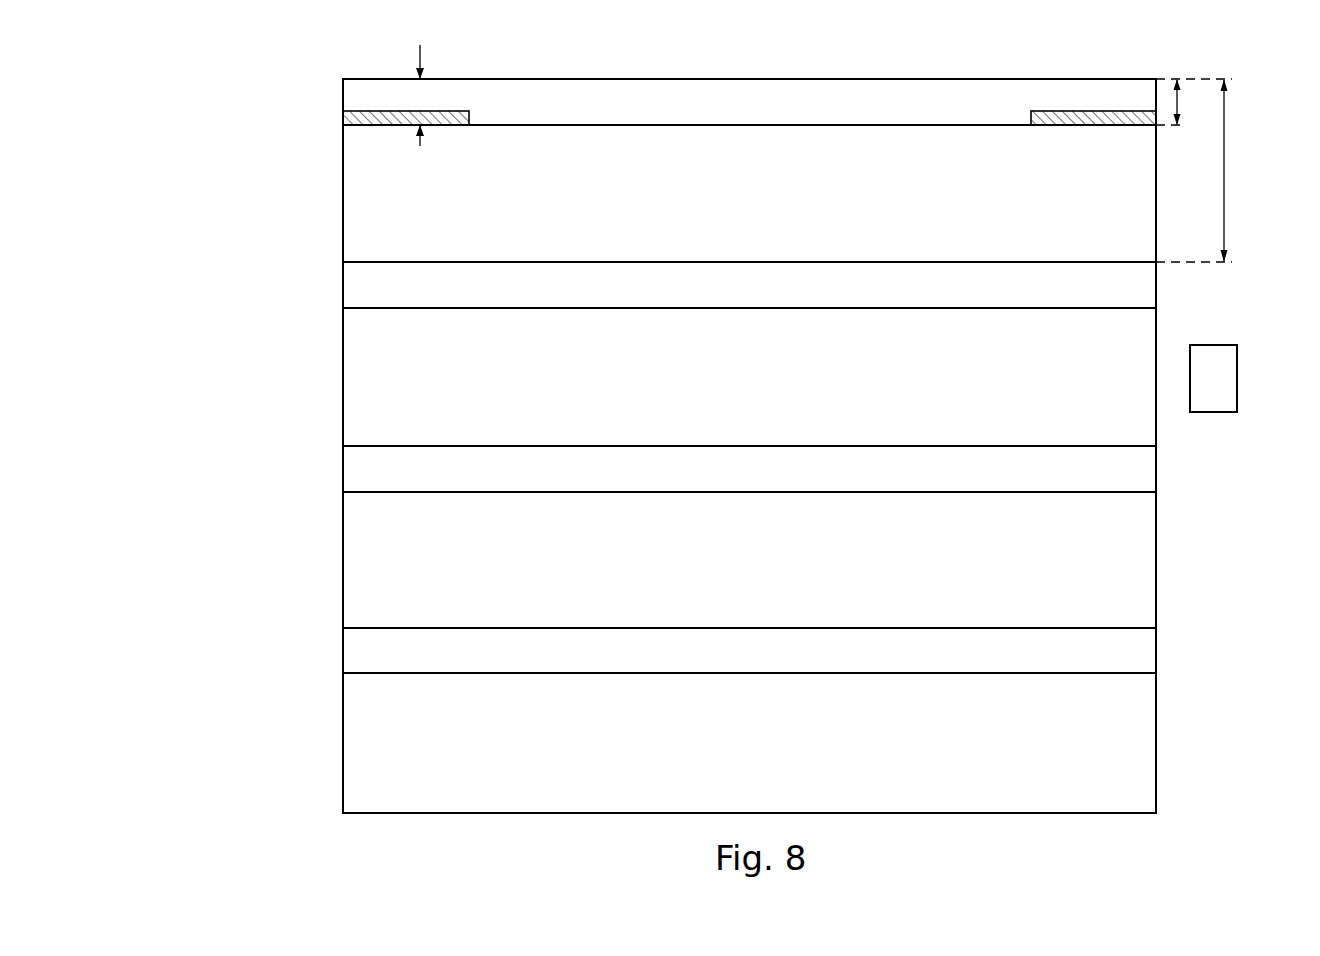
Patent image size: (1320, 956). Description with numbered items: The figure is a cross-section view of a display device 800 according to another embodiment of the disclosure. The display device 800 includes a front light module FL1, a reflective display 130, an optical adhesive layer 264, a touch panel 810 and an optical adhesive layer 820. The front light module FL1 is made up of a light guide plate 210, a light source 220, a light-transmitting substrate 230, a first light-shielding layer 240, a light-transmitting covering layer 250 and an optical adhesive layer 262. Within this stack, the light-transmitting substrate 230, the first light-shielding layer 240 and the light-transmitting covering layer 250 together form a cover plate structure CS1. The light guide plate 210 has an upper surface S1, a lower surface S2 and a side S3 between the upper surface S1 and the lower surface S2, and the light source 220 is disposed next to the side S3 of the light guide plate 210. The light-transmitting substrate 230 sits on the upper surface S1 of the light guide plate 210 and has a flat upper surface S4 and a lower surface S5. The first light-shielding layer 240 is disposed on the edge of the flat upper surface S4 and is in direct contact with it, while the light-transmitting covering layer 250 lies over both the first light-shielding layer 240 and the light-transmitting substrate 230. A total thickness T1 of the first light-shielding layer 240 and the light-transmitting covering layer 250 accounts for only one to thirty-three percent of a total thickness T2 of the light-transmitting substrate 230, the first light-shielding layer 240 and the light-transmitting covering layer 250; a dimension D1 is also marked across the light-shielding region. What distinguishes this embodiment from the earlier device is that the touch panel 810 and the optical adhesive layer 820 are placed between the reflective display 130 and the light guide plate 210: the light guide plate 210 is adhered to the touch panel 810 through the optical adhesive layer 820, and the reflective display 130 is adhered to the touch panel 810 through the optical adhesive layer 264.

The display device 800 is at (197, 74).
The light-transmitting covering layer 250 is at (348, 96).
The first light-shielding layer 240 is at (348, 119).
The flat upper surface S4 is at (455, 126).
The distance D1 is at (420, 84).
The light-transmitting substrate 230 is at (348, 191).
The lower surface S5 is at (411, 262).
The optical adhesive layer 262 is at (348, 286).
The upper surface S1 is at (452, 308).
The light guide plate 210 is at (348, 371).
The lower surface S2 is at (411, 446).
The side S3 is at (1157, 323).
The light source 220 is at (1228, 375).
The optical adhesive layer 820 is at (348, 469).
The touch panel 810 is at (348, 554).
The optical adhesive layer 264 is at (348, 653).
The reflective display 130 is at (348, 743).
The total thickness T1 is at (1194, 102).
The total thickness T2 is at (1207, 170).
The front light module FL1 is at (172, 563).
The cover plate structure CS1 is at (172, 770).